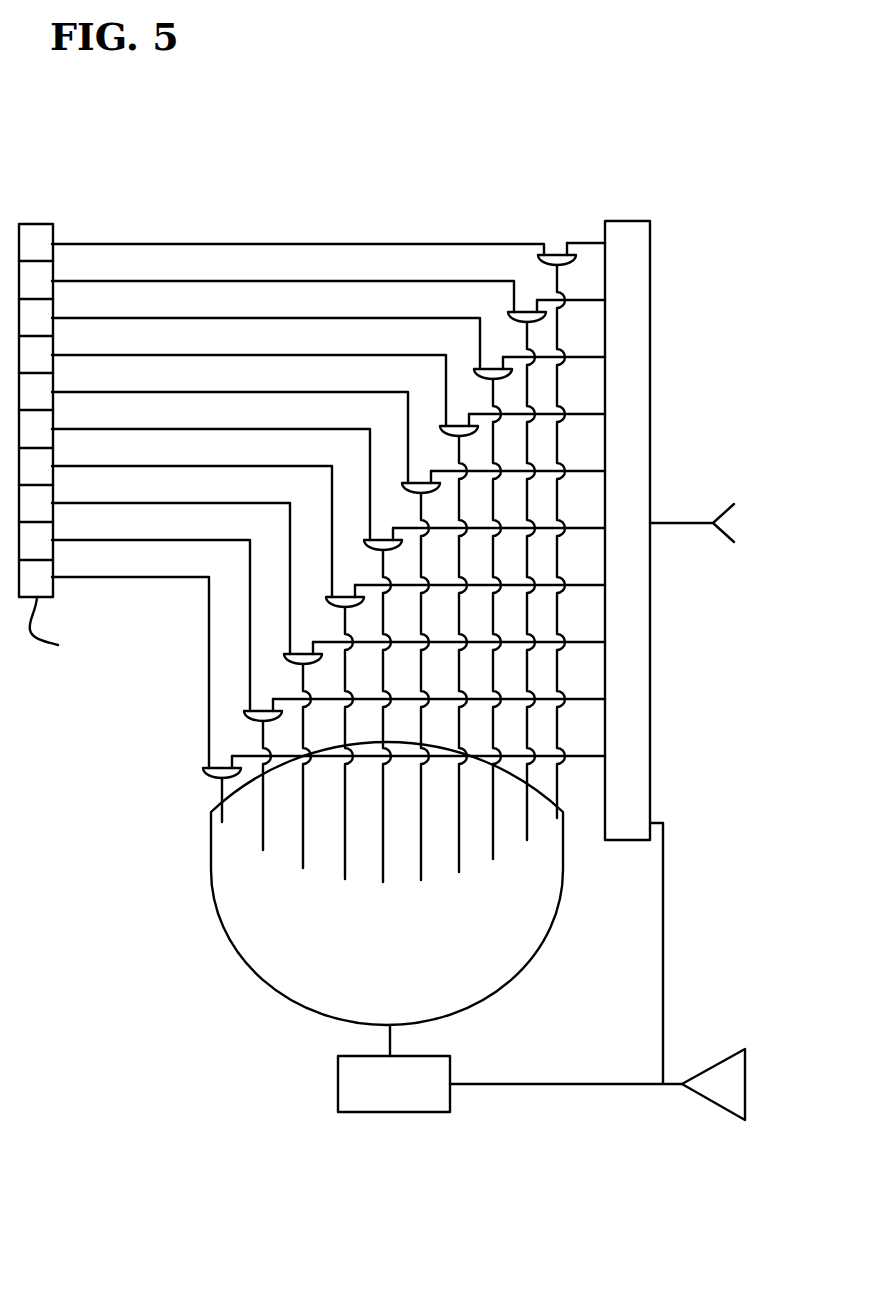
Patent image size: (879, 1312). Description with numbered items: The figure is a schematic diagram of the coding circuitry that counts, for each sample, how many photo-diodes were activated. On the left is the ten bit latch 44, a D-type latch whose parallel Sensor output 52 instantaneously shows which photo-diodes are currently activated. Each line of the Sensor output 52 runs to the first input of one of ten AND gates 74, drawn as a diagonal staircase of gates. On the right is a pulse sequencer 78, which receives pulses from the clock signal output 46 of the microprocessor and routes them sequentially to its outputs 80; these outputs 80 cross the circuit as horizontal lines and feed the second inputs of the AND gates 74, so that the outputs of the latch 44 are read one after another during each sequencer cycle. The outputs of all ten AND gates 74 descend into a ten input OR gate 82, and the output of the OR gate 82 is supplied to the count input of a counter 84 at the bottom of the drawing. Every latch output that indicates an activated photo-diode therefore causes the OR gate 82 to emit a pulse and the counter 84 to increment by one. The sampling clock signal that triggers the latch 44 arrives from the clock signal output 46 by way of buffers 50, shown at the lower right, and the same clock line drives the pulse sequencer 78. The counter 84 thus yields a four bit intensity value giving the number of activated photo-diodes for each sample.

The ten bit latch 44 is at (64, 630).
The clock signal output 46 is at (711, 525).
The buffer 50 is at (597, 971).
The Sensor output 52 is at (63, 241).
The AND gate 74 is at (510, 320).
The pulse sequencer 78 is at (655, 235).
The pulse sequencer output 80 is at (602, 352).
The OR gate 82 is at (236, 914).
The counter 84 is at (450, 1066).